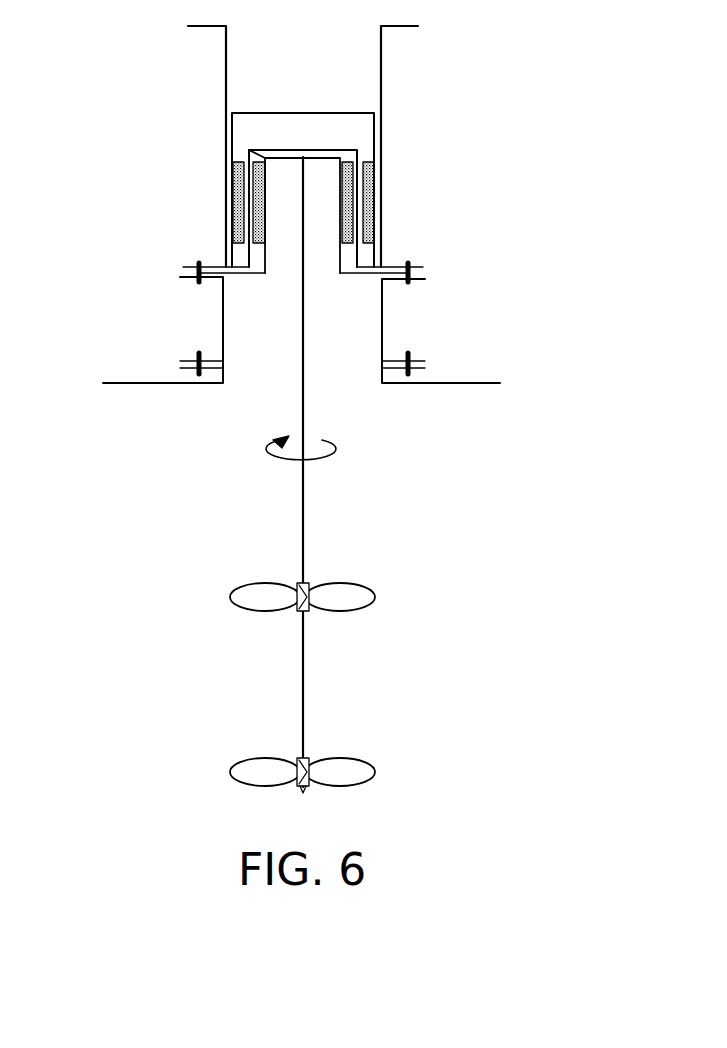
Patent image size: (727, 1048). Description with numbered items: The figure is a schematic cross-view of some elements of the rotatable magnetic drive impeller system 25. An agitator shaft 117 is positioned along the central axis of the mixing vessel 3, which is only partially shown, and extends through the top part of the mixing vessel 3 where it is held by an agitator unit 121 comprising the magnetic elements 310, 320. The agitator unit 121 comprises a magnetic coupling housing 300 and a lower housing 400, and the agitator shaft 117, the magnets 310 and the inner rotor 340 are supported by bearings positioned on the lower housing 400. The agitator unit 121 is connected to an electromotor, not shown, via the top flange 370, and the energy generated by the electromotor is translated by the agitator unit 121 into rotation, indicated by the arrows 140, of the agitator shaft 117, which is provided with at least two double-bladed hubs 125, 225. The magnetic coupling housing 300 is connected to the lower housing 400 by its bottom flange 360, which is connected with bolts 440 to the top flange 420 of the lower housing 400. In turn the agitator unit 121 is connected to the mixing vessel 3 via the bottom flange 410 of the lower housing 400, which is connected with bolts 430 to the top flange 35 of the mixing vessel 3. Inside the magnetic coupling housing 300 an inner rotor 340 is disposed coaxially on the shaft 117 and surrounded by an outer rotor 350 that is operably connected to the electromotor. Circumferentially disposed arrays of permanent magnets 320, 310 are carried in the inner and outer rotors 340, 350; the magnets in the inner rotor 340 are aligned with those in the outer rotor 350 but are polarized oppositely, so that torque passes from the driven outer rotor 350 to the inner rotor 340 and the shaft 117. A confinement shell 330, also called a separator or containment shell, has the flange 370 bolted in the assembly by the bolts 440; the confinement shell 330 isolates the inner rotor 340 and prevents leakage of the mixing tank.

The mixing vessel 3 is at (103, 383).
The rotatable magnetic drive impeller system 25 is at (430, 481).
The top flange of the mixing vessel 35 is at (180, 368).
The agitator shaft 117 is at (302, 497).
The agitator unit 121 is at (500, 166).
The double-bladed hub 125 is at (267, 760).
The rotation arrows 140 is at (337, 445).
The double-bladed hub 225 is at (267, 588).
The magnetic coupling housing 300 is at (381, 72).
The permanent magnets 310 is at (257, 172).
The permanent magnets 320 is at (374, 172).
The confinement shell 330 is at (357, 197).
The inner rotor 340 is at (249, 149).
The outer rotor 350 is at (374, 121).
The bottom flange of the magnetic coupling housing 360 is at (183, 267).
The top flange 370 is at (197, 26).
The lower housing 400 is at (382, 322).
The bottom flange of the lower housing 410 is at (418, 360).
The top flange of the lower housing 420 is at (418, 279).
The bolts 430 is at (198, 355).
The bolts 440 is at (199, 268).